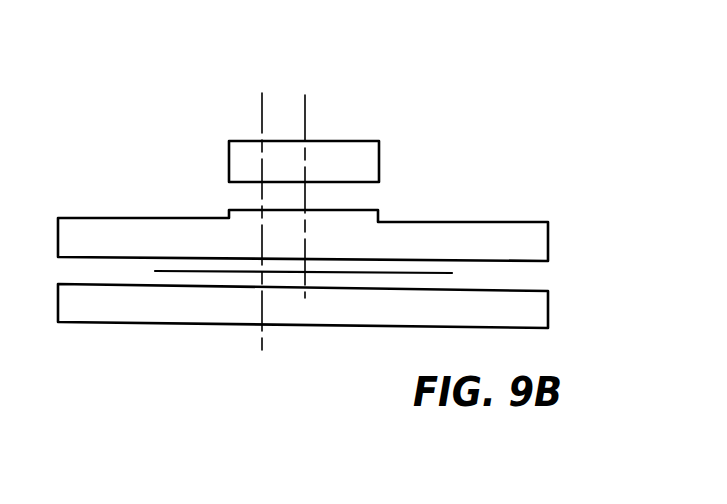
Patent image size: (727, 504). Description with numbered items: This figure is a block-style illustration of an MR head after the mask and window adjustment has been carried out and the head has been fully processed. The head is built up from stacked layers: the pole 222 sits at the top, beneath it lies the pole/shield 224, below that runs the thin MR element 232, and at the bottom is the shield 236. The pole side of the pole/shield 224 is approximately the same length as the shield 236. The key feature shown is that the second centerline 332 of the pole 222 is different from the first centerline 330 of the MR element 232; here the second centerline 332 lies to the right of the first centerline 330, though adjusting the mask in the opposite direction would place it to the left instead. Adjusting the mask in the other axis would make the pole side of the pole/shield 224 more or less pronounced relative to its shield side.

The pole 222 is at (379, 158).
The pole/shield 224 is at (548, 228).
The MR element 232 is at (440, 276).
The shield 236 is at (548, 303).
The centerline (CL1) 330 is at (261, 107).
The centerline (CL2) 332 is at (305, 112).